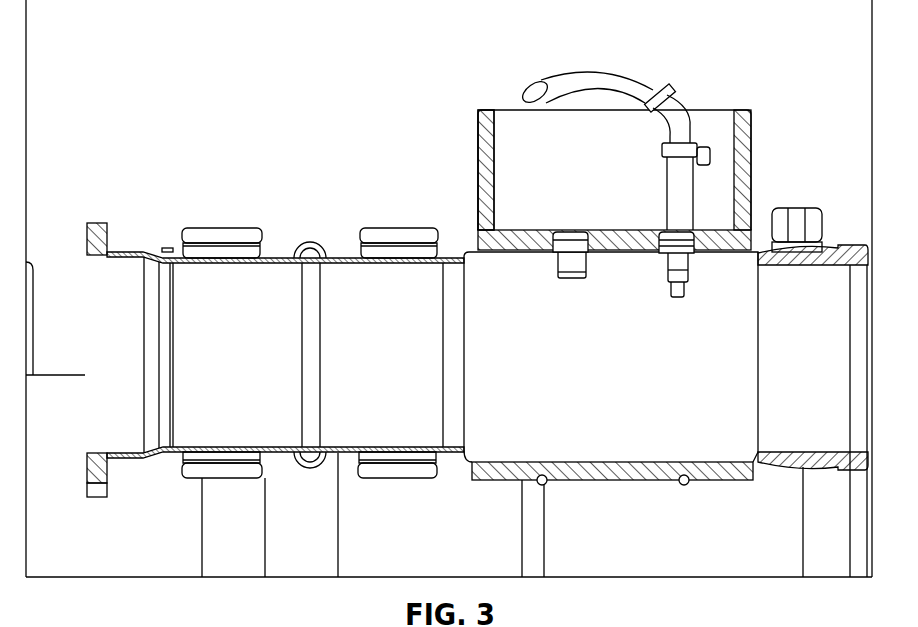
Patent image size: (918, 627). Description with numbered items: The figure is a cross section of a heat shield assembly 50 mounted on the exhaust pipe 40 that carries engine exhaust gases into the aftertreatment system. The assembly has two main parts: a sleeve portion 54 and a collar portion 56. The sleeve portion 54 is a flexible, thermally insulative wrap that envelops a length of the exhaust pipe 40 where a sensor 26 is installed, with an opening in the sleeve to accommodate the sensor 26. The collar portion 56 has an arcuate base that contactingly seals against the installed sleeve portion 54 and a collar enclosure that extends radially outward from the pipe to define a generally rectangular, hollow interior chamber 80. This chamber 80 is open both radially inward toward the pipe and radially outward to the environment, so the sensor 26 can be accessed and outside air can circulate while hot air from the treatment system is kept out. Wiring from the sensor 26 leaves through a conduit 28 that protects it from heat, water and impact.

The sensor 26 is at (683, 223).
The conduit 28 is at (663, 118).
The exhaust pipe 40 is at (108, 240).
The heat shield assembly 50 is at (579, 160).
The sleeve portion 54 is at (519, 242).
The collar portion 56 is at (491, 193).
The interior chamber 80 is at (619, 194).